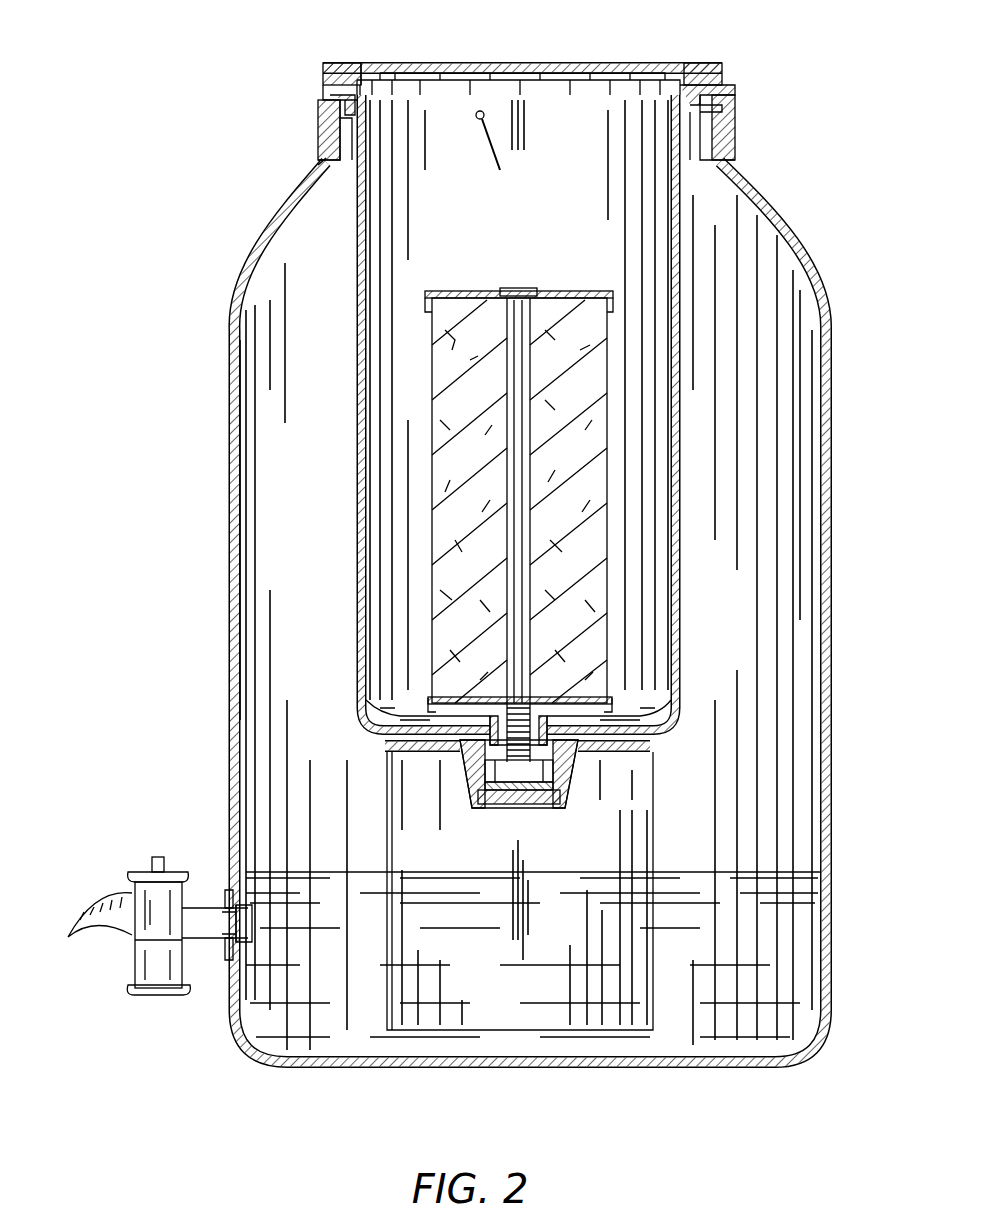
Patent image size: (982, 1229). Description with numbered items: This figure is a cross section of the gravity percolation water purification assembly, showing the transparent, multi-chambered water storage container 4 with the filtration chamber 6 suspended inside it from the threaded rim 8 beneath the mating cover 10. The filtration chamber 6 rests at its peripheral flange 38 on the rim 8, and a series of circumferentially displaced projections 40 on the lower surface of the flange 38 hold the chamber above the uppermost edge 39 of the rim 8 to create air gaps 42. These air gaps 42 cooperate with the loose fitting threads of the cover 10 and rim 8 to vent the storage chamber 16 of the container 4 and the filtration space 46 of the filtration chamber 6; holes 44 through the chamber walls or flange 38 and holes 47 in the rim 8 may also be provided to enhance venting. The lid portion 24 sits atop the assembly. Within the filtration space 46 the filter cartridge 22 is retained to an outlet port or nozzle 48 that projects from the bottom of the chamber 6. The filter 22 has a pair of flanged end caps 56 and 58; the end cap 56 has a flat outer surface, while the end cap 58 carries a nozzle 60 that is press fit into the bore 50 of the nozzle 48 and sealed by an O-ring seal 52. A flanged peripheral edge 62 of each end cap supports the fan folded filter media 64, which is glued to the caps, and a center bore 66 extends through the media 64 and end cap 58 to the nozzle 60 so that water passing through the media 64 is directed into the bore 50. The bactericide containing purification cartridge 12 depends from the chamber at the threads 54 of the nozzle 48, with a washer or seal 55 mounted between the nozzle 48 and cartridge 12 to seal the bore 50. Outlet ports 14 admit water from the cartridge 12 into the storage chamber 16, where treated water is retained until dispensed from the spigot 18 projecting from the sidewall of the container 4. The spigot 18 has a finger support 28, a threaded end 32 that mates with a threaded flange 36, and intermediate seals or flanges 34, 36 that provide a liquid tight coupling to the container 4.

The water storage container 4 is at (832, 645).
The filtration chamber 6 is at (680, 640).
The threaded rim 8 is at (330, 130).
The cover 10 is at (740, 88).
The purification cartridge 12 is at (653, 830).
The outlet ports 14 is at (618, 752).
The storage chamber 16 is at (783, 790).
The spigot 18 is at (95, 898).
The filter cartridge 22 is at (480, 293).
The lid 24 is at (722, 66).
The finger support 28 is at (157, 857).
The threaded end 32 is at (250, 918).
The seal or flange 34 is at (227, 892).
The threaded flange 36 is at (243, 948).
The peripheral flange 38 is at (328, 97).
The uppermost edge 39 is at (345, 63).
The projections 40 is at (735, 104).
The air gaps 42 is at (722, 135).
The holes 44 is at (498, 153).
The filtration space 46 is at (638, 607).
The holes 47 is at (326, 162).
The nozzle 48 is at (558, 762).
The bore 50 is at (428, 700).
The O-ring seal 52 is at (485, 762).
The threads 54 is at (500, 804).
The washer or seal 55 is at (485, 790).
The end cap 56 is at (555, 292).
The end cap 58 is at (418, 692).
The nozzle 60 is at (605, 718).
The flanged peripheral edge 62 is at (430, 308).
The filter media 64 is at (608, 473).
The center bore 66 is at (518, 533).